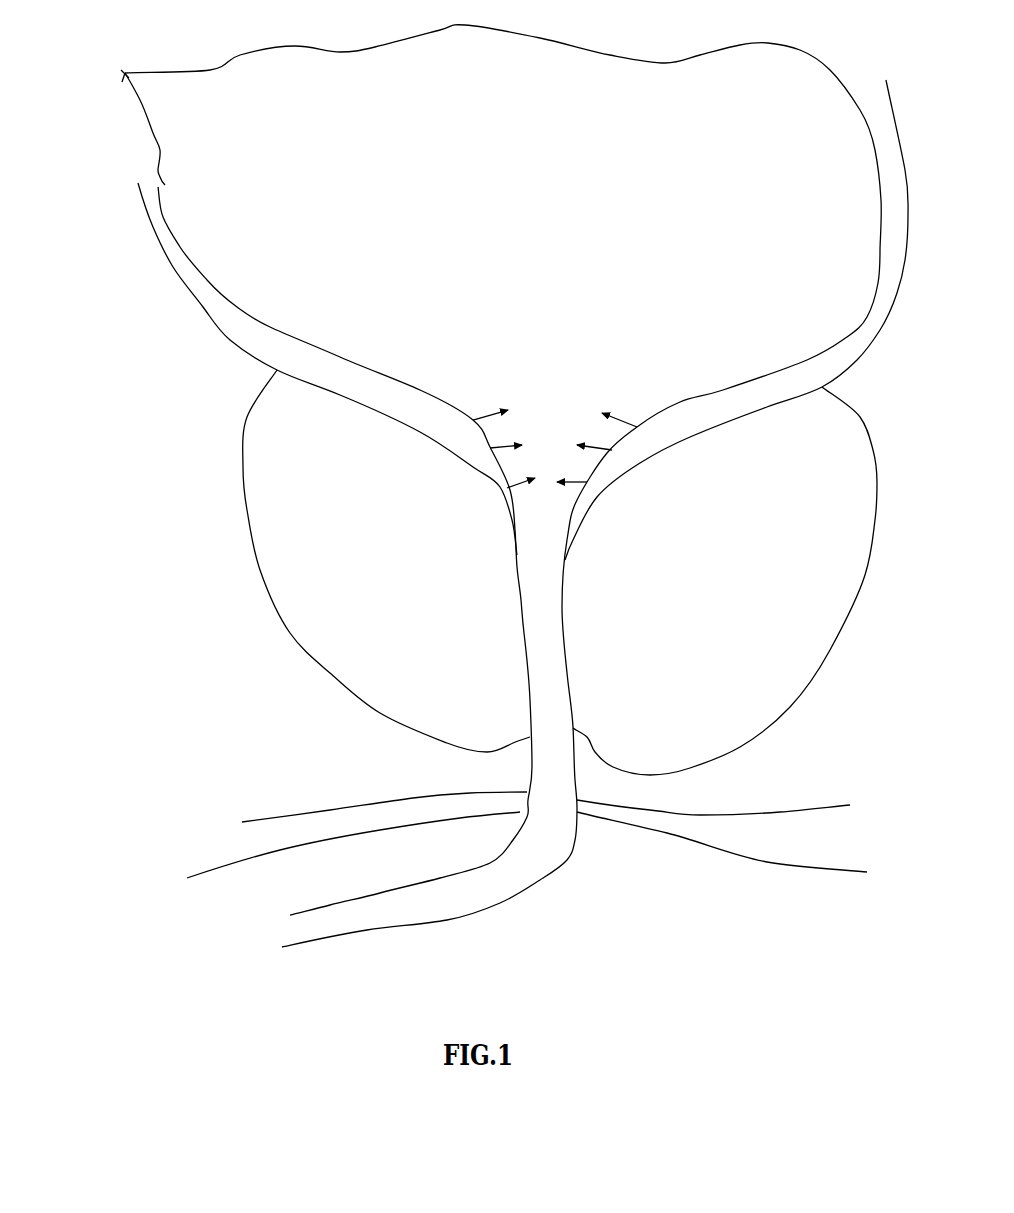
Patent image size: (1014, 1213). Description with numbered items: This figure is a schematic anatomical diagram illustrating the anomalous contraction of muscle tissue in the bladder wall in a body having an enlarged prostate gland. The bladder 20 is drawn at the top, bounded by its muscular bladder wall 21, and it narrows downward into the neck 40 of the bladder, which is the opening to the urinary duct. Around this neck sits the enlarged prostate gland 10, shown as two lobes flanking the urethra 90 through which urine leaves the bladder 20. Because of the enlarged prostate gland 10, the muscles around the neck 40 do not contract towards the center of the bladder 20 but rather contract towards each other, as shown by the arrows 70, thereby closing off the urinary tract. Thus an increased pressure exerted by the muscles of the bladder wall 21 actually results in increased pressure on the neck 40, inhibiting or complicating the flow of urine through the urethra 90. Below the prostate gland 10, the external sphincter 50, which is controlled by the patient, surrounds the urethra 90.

The prostate gland 10 is at (282, 577).
The bladder 20 is at (210, 162).
The bladder wall 21 is at (247, 330).
The neck of the bladder 40 is at (485, 439).
The external sphincter 50 is at (447, 808).
The arrows 70 is at (630, 423).
The urethra 90 is at (537, 875).